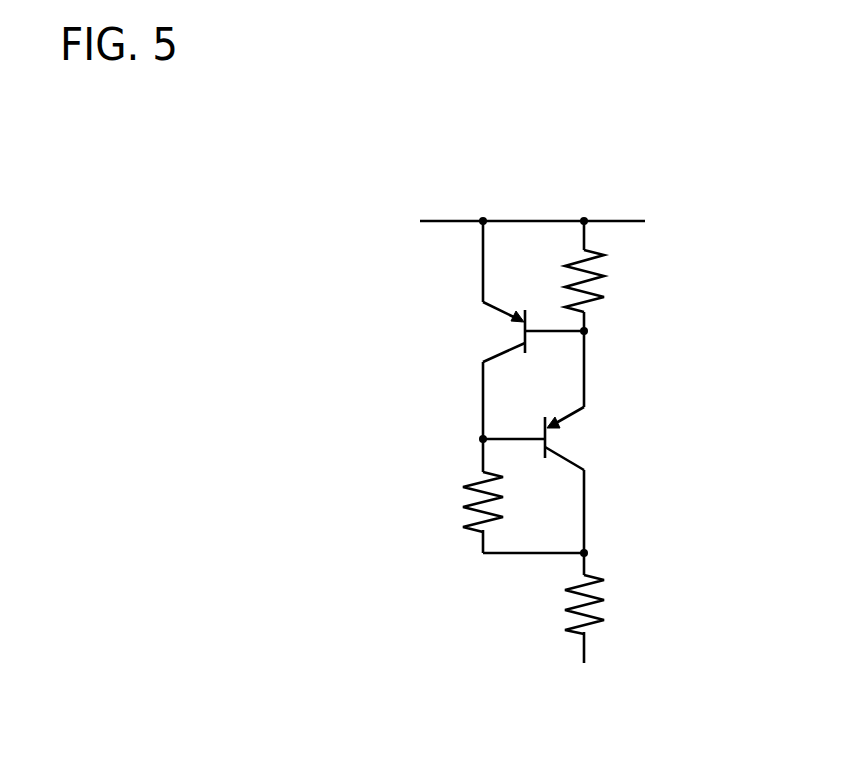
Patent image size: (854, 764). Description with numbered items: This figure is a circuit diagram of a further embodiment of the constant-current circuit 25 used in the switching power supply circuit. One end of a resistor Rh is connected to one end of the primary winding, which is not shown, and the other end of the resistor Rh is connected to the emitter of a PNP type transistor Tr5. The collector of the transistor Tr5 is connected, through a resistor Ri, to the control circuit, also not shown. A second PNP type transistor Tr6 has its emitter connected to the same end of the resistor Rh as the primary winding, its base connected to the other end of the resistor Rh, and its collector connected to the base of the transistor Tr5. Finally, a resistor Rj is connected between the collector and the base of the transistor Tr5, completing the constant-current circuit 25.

The constant-current circuit 25 is at (535, 200).
The PNP type transistor Tr6 is at (473, 337).
The PNP type transistor Tr5 is at (580, 438).
The resistor Rh is at (618, 282).
The resistor Rj is at (448, 503).
The resistor Ri is at (615, 598).